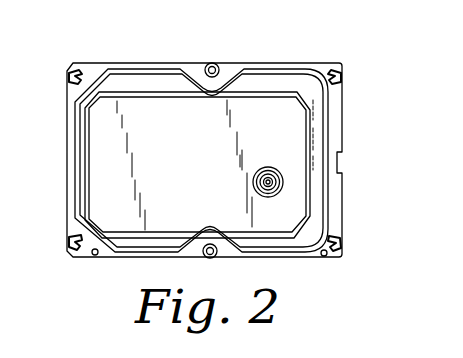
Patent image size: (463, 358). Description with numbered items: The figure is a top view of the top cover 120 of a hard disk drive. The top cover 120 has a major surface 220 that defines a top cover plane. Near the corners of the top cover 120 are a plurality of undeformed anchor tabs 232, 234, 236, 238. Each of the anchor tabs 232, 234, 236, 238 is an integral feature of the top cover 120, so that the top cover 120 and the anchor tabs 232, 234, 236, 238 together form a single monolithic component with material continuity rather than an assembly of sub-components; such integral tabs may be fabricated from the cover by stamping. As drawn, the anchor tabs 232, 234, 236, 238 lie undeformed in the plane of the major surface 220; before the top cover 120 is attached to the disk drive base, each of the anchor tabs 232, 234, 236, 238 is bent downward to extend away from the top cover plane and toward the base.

The top cover 120 is at (148, 63).
The major surface 220 is at (236, 116).
The anchor tab 232 is at (341, 80).
The anchor tab 234 is at (343, 245).
The anchor tab 236 is at (68, 78).
The anchor tab 238 is at (67, 243).